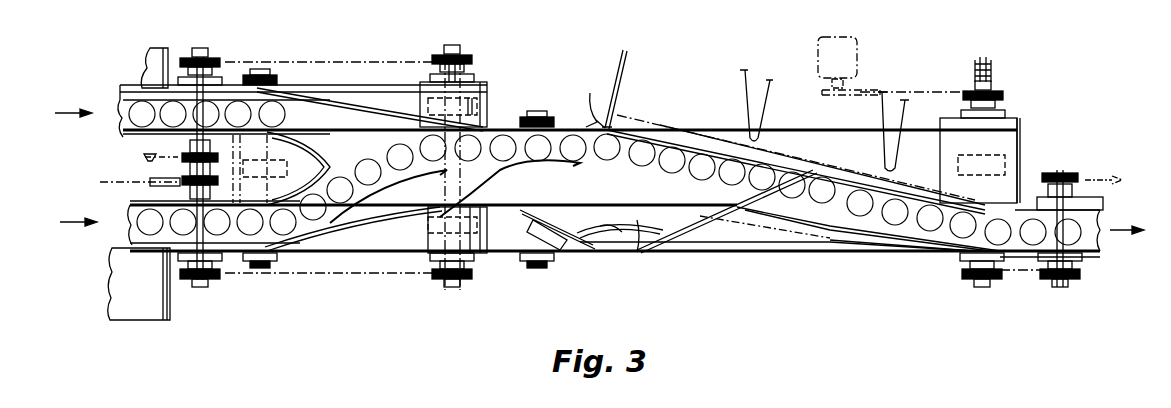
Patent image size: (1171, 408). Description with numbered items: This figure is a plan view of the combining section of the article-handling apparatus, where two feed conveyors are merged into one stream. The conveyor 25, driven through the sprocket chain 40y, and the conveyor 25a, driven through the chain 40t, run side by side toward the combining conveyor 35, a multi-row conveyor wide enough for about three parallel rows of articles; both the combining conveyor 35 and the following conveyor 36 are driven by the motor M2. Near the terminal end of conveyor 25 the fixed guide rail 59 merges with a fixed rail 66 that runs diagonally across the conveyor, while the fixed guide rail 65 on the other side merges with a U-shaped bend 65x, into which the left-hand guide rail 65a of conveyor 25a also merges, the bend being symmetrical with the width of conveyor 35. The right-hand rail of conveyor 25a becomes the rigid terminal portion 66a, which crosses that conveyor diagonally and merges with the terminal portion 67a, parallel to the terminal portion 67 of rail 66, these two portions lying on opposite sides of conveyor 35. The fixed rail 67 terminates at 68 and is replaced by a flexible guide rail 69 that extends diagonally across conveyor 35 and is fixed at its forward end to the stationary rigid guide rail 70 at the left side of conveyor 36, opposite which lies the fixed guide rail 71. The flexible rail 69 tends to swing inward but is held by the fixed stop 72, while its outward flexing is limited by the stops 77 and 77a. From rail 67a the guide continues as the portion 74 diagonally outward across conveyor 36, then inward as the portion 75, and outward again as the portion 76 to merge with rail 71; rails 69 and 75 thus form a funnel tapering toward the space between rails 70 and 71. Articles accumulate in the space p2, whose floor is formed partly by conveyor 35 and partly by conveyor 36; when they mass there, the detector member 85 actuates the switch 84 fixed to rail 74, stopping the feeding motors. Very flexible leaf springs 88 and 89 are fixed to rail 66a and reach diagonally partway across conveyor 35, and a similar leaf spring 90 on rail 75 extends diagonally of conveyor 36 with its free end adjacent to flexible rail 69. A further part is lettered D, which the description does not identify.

The conveyor 25 is at (120, 105).
The conveyor 25a is at (130, 232).
The combining conveyor 35 is at (840, 155).
The conveyor 36 is at (1103, 218).
The sprocket chain 40t is at (110, 183).
The sprocket chain 40y is at (145, 158).
The fixed guide rail 59 is at (142, 80).
The fixed guide rail 65 is at (125, 148).
The fixed left-hand guide rail 65a is at (130, 203).
The U-shaped bend 65x is at (335, 162).
The fixed rail 66 is at (345, 100).
The rigid terminal portion 66a is at (300, 245).
The terminal portion 67 is at (495, 122).
The terminal portion 67a is at (490, 253).
The termination of guide rail 68 is at (585, 120).
The flexible guide rail 69 is at (665, 130).
The stationary rigid guide rail 70 is at (1050, 185).
The fixed guide rail 71 is at (1100, 255).
The fixed stop 72 is at (618, 112).
The guide rail 74 is at (610, 234).
The guide rail 75 is at (690, 255).
The guide rail portion 76 is at (842, 245).
The stop 77 is at (748, 107).
The stop 77a is at (888, 156).
The switch 84 is at (570, 255).
The detector member 85 is at (660, 218).
The leaf spring 88 is at (388, 178).
The leaf spring 89 is at (512, 170).
The leaf spring 90 is at (775, 235).
The deflector D is at (642, 249).
The motor M2 is at (847, 62).
The space p2 is at (698, 186).